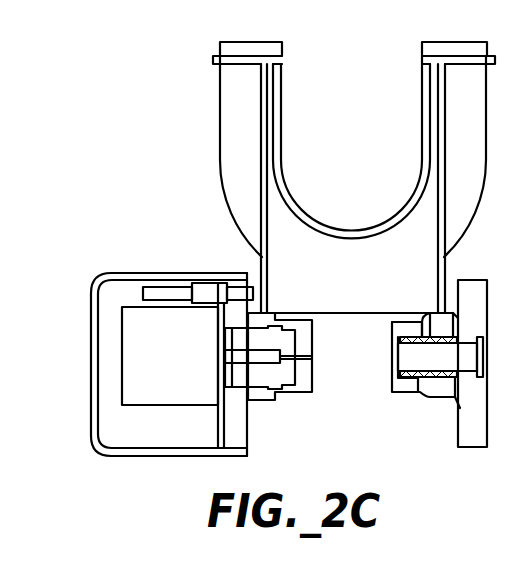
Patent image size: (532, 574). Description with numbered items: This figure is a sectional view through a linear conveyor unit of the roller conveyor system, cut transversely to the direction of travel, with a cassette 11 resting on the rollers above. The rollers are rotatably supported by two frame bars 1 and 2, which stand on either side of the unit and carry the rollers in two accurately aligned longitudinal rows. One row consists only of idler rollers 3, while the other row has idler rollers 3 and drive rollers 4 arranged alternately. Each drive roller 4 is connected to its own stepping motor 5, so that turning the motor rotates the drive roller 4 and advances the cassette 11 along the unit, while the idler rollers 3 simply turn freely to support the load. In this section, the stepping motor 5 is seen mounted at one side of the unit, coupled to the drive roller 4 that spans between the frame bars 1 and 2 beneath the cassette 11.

The frame bar 1 is at (467, 280).
The frame bar 2 is at (185, 272).
The idler roller 3 is at (413, 393).
The drive roller 4 is at (288, 393).
The stepping motor 5 is at (190, 407).
The cassette 11 is at (218, 156).